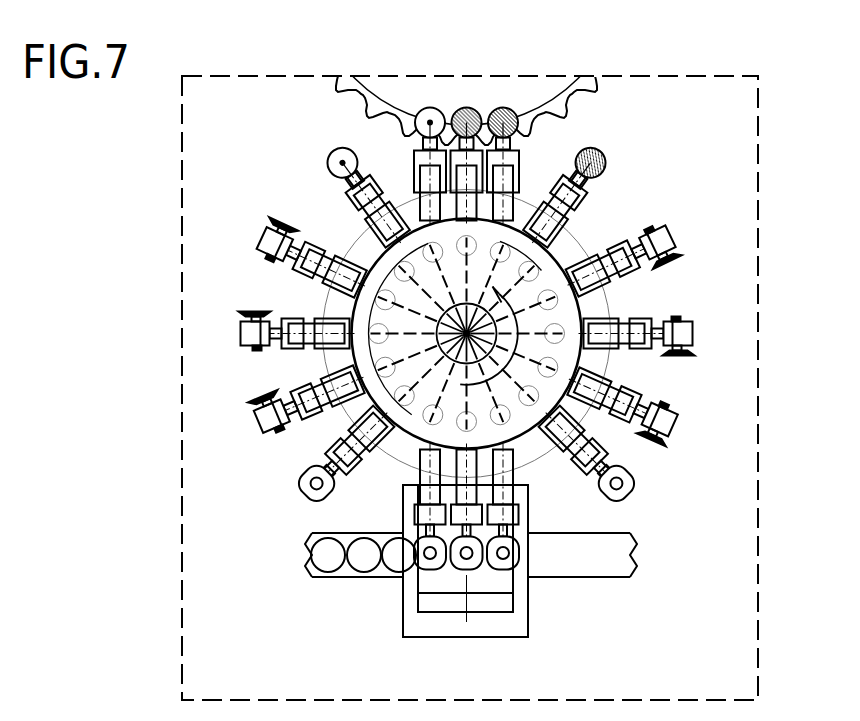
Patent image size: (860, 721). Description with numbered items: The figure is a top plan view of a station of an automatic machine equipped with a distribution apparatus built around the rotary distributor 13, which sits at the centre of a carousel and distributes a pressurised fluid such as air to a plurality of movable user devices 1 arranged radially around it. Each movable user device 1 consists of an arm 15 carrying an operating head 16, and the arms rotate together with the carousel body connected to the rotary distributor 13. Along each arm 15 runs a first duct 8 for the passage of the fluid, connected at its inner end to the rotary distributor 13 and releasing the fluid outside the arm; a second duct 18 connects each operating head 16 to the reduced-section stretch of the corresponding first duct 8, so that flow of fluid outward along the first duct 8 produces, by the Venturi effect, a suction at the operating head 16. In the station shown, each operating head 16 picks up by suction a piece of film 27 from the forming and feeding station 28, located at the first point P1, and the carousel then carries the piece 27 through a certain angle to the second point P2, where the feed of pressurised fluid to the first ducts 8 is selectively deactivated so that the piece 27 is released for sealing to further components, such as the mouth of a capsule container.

The movable user device 1 is at (276, 295).
The first duct 8 is at (347, 352).
The rotary distributor 13 is at (440, 351).
The arm 15 is at (628, 318).
The operating head 16 is at (660, 258).
The second duct 18 is at (255, 305).
The piece of film 27 is at (505, 114).
The forming and feeding station 28 is at (421, 598).
The first point P1 is at (478, 570).
The second point P2 is at (468, 105).